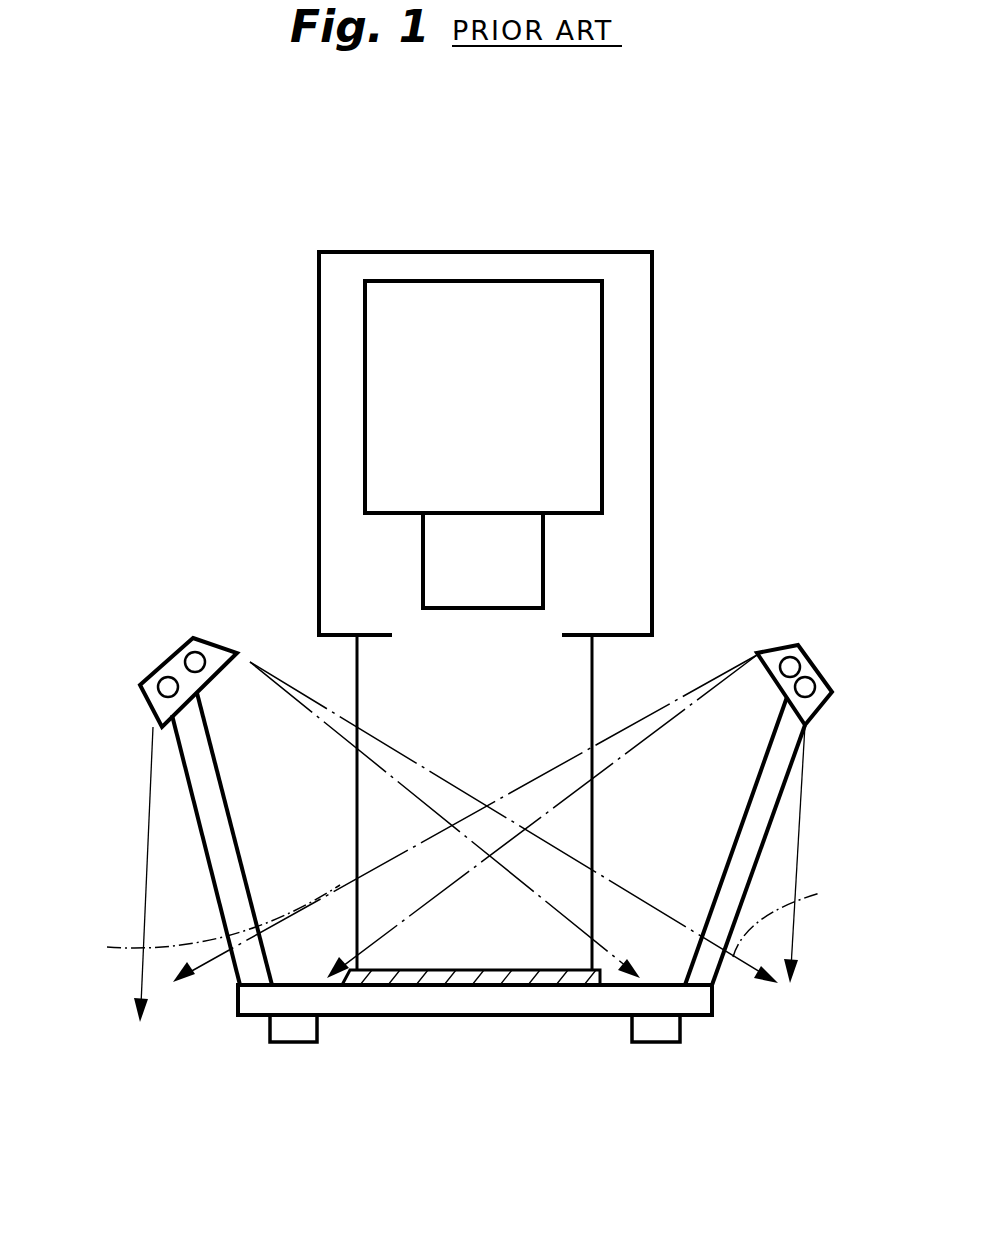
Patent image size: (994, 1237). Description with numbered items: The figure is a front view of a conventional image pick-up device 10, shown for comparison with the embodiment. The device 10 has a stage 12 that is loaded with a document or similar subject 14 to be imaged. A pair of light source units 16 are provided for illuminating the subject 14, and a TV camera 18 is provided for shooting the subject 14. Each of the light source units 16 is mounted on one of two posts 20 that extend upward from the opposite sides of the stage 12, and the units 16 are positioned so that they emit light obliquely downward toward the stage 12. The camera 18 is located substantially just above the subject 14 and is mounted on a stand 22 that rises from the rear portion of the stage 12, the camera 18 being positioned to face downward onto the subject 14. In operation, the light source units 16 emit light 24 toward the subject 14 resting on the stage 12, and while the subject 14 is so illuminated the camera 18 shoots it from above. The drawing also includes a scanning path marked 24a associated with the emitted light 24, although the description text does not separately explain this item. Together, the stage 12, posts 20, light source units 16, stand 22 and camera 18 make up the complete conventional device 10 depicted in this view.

The image pick-up device 10 is at (748, 258).
The stage 12 is at (713, 1002).
The subject 14 is at (463, 972).
The light source unit 16 is at (164, 664).
The TV camera 18 is at (583, 352).
The post 20 is at (210, 868).
The stand 22 is at (358, 681).
The light 24 is at (350, 745).
The beam scanning locus 24a is at (143, 918).